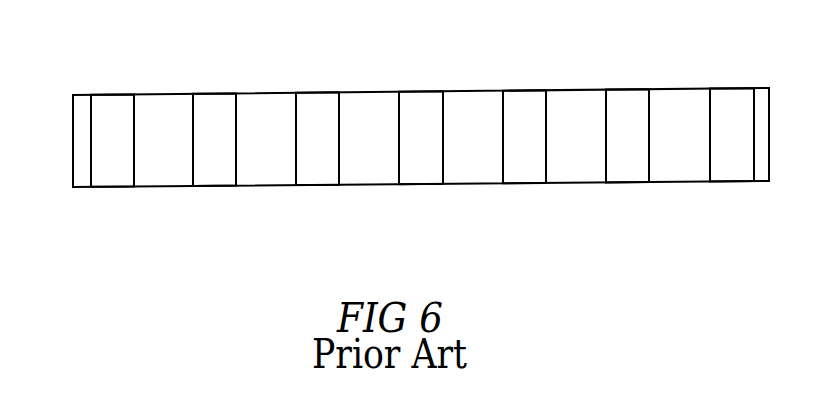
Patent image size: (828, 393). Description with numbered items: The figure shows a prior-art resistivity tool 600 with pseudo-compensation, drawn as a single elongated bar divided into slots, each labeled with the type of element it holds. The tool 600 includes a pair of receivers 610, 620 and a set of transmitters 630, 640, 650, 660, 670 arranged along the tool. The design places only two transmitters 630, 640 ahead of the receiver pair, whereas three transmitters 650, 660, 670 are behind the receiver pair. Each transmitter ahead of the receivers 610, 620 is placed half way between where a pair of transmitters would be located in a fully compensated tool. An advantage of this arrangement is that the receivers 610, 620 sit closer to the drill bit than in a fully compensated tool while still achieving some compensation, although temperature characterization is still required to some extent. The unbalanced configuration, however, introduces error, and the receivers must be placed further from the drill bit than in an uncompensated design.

The resistivity tool 600 is at (610, 70).
The receiver 610 is at (323, 186).
The receiver 620 is at (425, 185).
The transmitter 630 is at (112, 187).
The transmitter 640 is at (222, 187).
The transmitter 650 is at (525, 185).
The transmitter 660 is at (628, 184).
The transmitter 670 is at (740, 182).